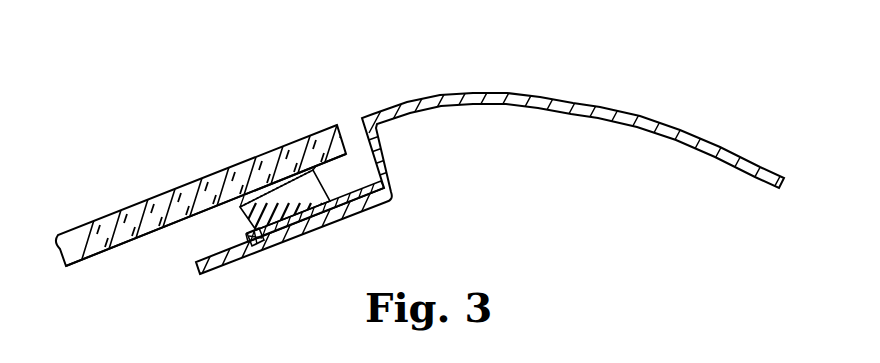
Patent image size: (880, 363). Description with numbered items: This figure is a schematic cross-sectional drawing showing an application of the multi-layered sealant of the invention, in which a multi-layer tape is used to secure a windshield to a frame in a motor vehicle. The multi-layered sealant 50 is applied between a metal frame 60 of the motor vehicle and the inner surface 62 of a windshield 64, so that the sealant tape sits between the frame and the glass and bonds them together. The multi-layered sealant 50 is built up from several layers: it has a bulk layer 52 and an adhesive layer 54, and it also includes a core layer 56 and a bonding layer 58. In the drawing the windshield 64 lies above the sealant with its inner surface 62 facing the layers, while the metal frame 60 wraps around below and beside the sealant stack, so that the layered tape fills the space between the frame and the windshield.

The multi-layered sealant 50 is at (287, 200).
The bulk layer 52 is at (257, 242).
The adhesive layer 54 is at (283, 236).
The core layer 56 is at (240, 208).
The bonding layer 58 is at (262, 190).
The metal frame 60 is at (374, 204).
The inner surface 62 is at (111, 247).
The windshield 64 is at (108, 228).